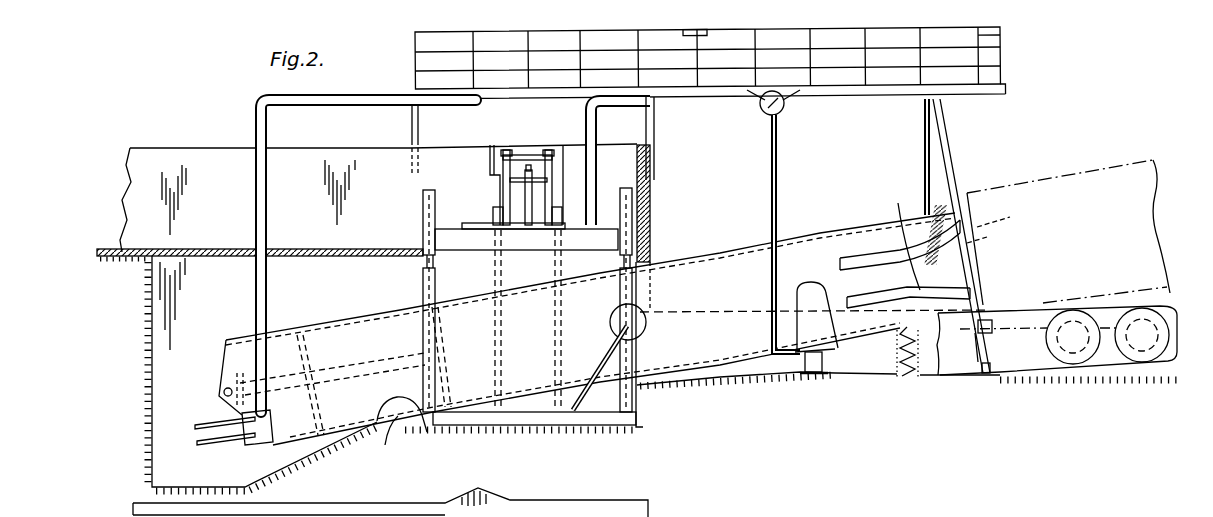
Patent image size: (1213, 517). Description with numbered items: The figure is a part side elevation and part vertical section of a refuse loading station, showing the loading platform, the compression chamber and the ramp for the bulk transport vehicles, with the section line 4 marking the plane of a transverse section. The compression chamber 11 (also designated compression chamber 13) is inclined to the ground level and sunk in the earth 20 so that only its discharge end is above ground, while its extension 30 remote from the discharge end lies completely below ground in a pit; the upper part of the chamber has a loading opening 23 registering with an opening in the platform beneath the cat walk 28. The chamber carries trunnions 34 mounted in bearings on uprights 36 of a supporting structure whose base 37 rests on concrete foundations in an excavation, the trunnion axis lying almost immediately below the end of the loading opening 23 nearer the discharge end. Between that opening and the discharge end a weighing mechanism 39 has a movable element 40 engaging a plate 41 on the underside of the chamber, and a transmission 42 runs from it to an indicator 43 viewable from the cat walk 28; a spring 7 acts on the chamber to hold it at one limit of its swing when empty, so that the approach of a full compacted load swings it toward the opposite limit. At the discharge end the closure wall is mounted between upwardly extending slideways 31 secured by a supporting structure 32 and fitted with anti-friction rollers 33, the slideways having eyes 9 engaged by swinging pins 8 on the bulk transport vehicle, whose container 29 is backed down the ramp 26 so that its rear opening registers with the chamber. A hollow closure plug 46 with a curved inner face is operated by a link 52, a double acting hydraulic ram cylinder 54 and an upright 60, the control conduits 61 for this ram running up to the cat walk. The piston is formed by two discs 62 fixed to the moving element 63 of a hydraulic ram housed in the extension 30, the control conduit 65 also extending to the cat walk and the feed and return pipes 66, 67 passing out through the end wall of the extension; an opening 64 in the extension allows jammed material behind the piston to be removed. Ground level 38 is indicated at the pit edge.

The section line 4- 4 is at (527, 130).
The spring 7 is at (905, 367).
The swinging pin 8 is at (990, 367).
The eye 9 is at (970, 350).
The compression chamber 11 is at (450, 427).
The compression chamber 13 is at (222, 249).
The soil / embankment 20 is at (215, 160).
The loading opening 23 is at (432, 281).
The downward ramp 26 is at (1100, 372).
The cat walk 28 is at (840, 45).
The truck dump body 29 is at (850, 345).
The extension 30 is at (256, 443).
The slideway 31 is at (962, 180).
The supporting structure 32 is at (912, 242).
The anti-friction rollers 33 is at (973, 233).
The trunnion 34 is at (644, 330).
The upright 36 is at (640, 397).
The base 37 is at (565, 420).
The ground surface 38 is at (727, 378).
The weighing mechanism 39 is at (800, 366).
The movable element 40 is at (826, 366).
The plate 41 is at (800, 318).
The transmission 42 is at (776, 206).
The indicator 43 is at (783, 113).
The hollow closure plug 46 is at (603, 234).
The link 52 is at (543, 165).
The double acting hydraulic ram cylinder 54 is at (531, 198).
The upright 60 is at (557, 172).
The control conduits 61 is at (596, 130).
The disc 62 is at (296, 410).
The moving element 63 is at (330, 370).
The opening 64 is at (380, 447).
The control conduit 65 is at (266, 204).
The feed pipe 66 is at (202, 421).
The return pipe 67 is at (208, 446).